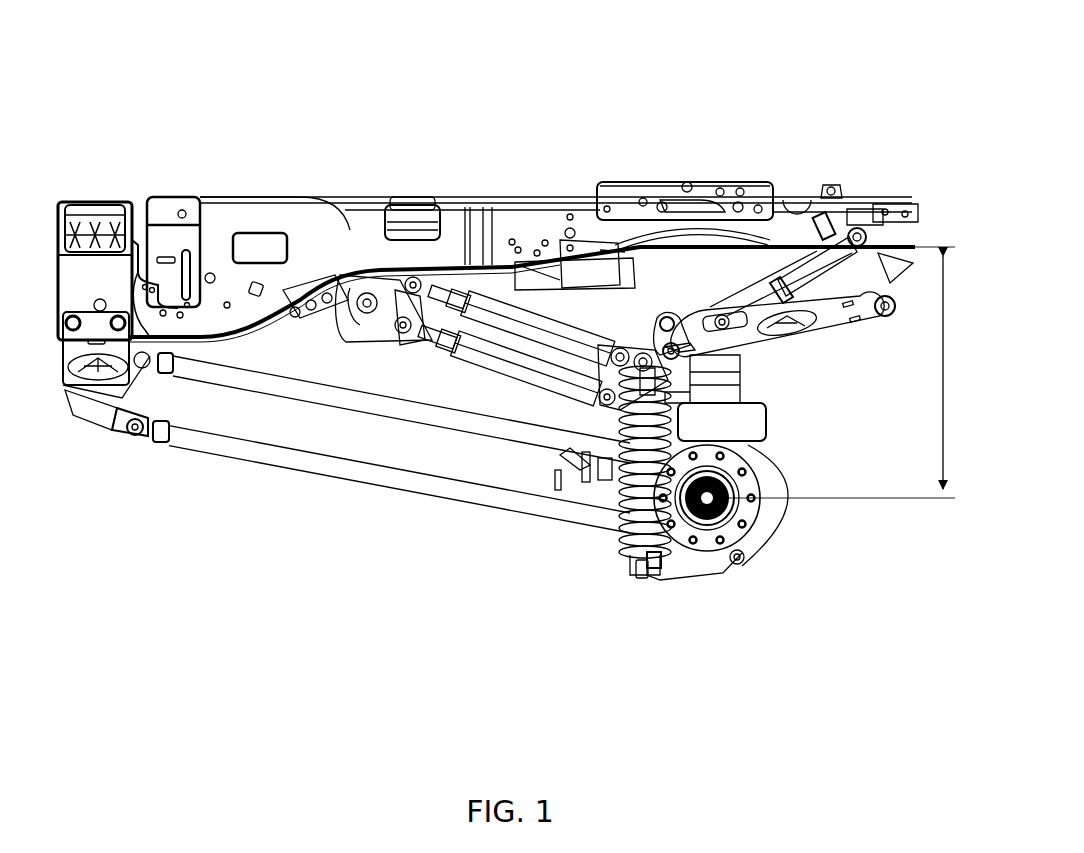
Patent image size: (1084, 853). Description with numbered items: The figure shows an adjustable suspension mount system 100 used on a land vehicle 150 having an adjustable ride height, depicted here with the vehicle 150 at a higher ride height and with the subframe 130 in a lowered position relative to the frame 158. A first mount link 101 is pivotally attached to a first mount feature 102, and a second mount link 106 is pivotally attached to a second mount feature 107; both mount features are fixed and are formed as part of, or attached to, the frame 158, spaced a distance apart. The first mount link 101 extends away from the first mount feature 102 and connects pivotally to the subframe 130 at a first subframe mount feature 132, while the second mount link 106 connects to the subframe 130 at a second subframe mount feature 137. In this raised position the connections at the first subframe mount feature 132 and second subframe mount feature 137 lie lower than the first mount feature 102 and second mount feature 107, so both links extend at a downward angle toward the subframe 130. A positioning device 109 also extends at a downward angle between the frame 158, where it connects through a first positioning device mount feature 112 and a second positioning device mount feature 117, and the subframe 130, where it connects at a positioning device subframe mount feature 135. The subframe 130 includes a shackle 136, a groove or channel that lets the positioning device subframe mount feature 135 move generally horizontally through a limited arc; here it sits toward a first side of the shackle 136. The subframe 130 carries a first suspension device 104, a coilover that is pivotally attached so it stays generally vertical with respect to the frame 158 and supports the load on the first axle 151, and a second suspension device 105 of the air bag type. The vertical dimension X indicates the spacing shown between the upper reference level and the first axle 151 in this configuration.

The adjustable suspension mount system 100 is at (232, 66).
The land vehicle 150 is at (247, 190).
The frame 158 is at (362, 240).
The first mount feature 102 is at (430, 225).
The first mount link 101 is at (493, 313).
The second mount link 106 is at (487, 355).
The second mount feature 107 is at (403, 338).
The first subframe mount feature 132 is at (620, 357).
The second subframe mount feature 137 is at (607, 397).
The subframe 130 is at (643, 357).
The shackle 136 is at (660, 340).
The positioning device subframe mount feature 135 is at (680, 350).
The positioning device 109 is at (700, 305).
The second positioning device mount feature 117 is at (887, 320).
The first positioning device mount feature 112 is at (857, 235).
The first suspension device 104 is at (645, 545).
The second suspension device 105 is at (750, 420).
The first axle 151 is at (730, 512).
The dimension X is at (797, 372).